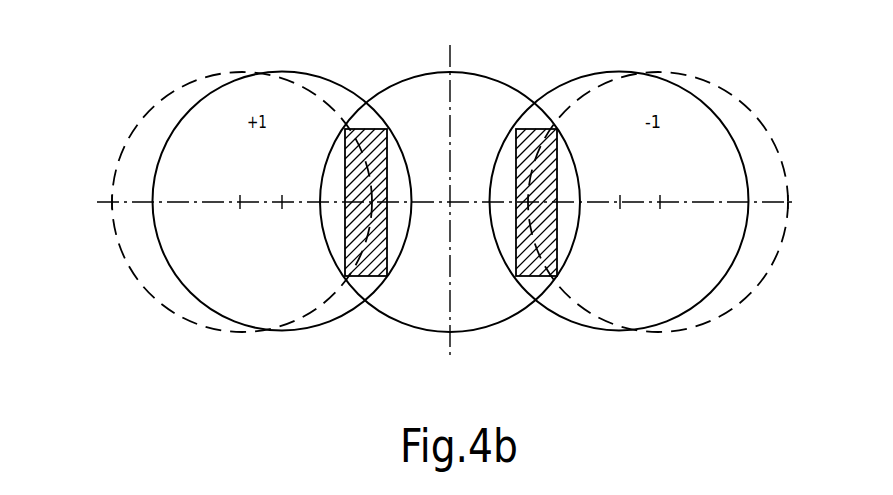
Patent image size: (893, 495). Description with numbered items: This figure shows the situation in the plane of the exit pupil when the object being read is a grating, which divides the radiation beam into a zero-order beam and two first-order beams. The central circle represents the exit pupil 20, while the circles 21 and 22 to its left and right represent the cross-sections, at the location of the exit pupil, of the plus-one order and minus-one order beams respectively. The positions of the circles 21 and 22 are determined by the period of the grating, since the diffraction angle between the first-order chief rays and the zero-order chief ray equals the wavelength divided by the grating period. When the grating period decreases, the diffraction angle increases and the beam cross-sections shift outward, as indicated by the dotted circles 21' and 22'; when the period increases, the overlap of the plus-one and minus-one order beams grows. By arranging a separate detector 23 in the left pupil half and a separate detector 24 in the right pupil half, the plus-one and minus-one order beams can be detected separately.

The exit pupil 20 is at (412, 330).
The cross-section of the +1 order beam 21 is at (282, 225).
The cross-section of the +1 order beam at smaller grating period 21' is at (237, 203).
The cross-section of the -1 order beam 22 is at (619, 226).
The cross-section of the -1 order beam at smaller grating period 22' is at (658, 205).
The detector 23 is at (367, 143).
The detector 24 is at (530, 137).